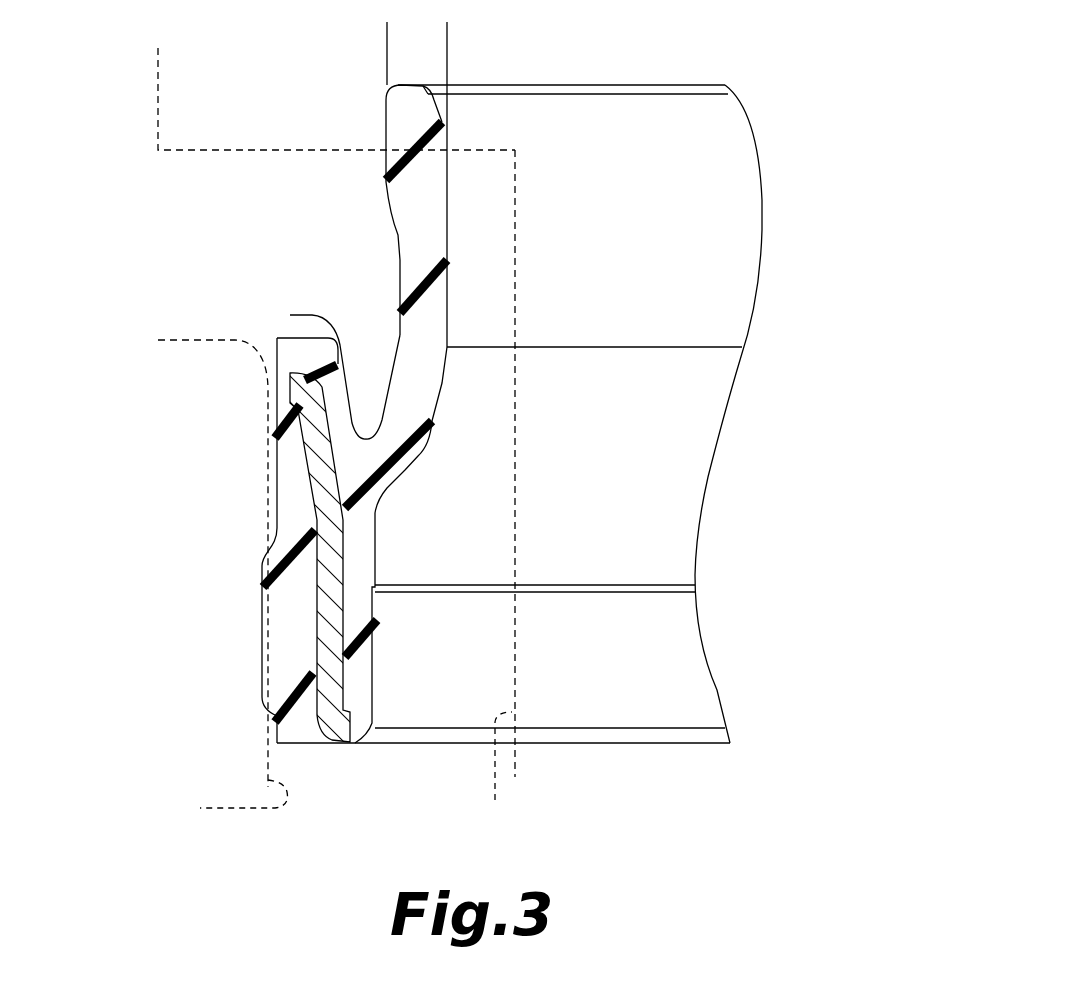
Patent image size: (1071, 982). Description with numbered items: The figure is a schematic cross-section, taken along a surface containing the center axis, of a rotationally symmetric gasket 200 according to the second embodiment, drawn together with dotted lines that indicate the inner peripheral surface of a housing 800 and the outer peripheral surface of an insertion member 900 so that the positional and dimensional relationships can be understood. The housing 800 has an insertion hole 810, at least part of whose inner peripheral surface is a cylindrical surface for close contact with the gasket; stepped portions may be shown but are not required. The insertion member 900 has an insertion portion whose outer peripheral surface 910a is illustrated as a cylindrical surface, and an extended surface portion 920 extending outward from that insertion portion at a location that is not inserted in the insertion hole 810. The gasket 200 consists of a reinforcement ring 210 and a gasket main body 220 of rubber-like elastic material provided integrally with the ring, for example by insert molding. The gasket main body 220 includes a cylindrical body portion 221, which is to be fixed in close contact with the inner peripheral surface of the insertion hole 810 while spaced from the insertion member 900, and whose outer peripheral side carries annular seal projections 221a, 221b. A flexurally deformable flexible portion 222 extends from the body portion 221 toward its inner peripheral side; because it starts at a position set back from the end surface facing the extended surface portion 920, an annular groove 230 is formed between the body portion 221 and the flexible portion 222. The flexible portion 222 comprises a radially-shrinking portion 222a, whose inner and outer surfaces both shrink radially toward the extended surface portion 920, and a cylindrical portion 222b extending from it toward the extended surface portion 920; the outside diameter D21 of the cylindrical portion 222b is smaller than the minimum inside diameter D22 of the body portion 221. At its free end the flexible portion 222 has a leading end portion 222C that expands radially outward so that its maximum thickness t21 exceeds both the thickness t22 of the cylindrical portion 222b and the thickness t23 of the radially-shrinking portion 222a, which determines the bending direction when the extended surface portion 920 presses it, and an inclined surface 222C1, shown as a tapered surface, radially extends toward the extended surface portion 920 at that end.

The gasket 200 is at (385, 222).
The reinforcement ring 210 is at (250, 558).
The gasket main body 220 is at (490, 393).
The body portion 221 is at (458, 559).
The annular seal projection 221a is at (263, 576).
The annular seal projection 221b is at (263, 647).
The flexible portion 222 is at (585, 353).
The radially-shrinking portion 222a is at (423, 407).
The cylindrical portion 222b is at (427, 245).
The leading end portion 222C is at (418, 116).
The inclined surface 222C1 is at (425, 89).
The annular groove 230 is at (295, 316).
The housing 800 is at (202, 563).
The insertion hole 810 is at (210, 804).
The insertion member 900 is at (583, 470).
The outer peripheral surface 910a is at (510, 778).
The extended surface portion 920 is at (203, 148).
The outside diameter D21 is at (405, 313).
The minimum inside diameter D22 is at (383, 520).
The maximum thickness portion t21 is at (517, 44).
The thickness t22 is at (502, 287).
The thickness t23 is at (360, 358).